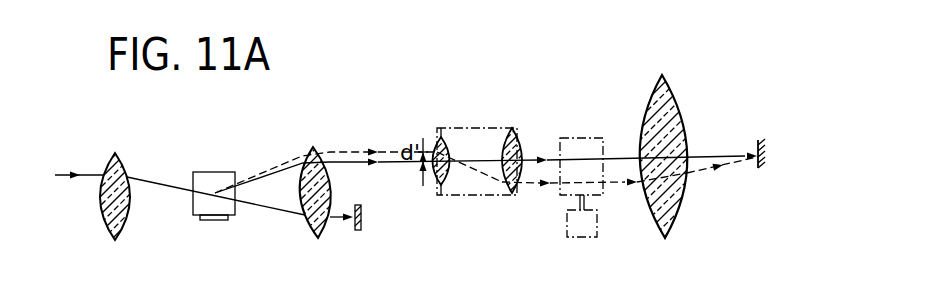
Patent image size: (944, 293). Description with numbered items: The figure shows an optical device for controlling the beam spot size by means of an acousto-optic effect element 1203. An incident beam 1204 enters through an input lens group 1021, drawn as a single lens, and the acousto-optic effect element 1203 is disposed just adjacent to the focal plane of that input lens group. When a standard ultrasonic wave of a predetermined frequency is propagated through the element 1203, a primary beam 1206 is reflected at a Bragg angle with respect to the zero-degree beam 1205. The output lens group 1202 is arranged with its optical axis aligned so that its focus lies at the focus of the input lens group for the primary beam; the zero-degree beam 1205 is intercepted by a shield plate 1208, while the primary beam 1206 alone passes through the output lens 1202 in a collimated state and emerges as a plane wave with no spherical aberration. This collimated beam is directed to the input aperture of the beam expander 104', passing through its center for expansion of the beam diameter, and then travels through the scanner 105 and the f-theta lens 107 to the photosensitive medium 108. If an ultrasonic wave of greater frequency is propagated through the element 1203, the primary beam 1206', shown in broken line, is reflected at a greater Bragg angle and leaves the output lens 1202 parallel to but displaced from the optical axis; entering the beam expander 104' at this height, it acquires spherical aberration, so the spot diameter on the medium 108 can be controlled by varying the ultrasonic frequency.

The collimating lens 1021 is at (115, 153).
The incident light beam 1204 is at (58, 176).
The acousto-optic effect element 1203 is at (213, 174).
The primary beam 1206 is at (486, 157).
The primary beam 1206' is at (486, 143).
The output lens group 1202 is at (314, 147).
The zero-degree beam 1205 is at (267, 211).
The shield plate 1208 is at (358, 231).
The beam expander 104' is at (477, 132).
The scanner 105 is at (587, 138).
The f-theta lens 107 is at (662, 75).
The photosensitive medium 108 is at (757, 143).